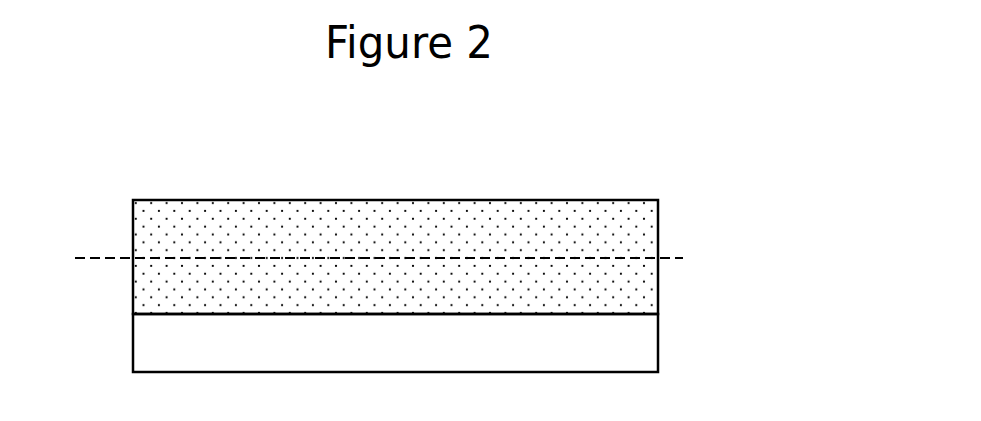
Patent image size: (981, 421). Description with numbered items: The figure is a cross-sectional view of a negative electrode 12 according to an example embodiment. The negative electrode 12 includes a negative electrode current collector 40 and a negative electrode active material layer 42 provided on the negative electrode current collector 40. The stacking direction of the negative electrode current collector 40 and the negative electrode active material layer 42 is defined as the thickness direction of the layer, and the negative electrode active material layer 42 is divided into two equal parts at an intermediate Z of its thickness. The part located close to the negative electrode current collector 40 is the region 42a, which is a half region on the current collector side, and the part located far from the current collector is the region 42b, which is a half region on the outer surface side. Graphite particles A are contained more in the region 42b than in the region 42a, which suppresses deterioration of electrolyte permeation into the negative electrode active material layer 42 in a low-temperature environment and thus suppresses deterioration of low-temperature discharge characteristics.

The negative electrode 12 is at (443, 206).
The negative electrode active material layer 42 is at (493, 240).
The region which is a half region on the negative electrode current collector side 42a is at (658, 293).
The region which is a half region on the outer surface side 42b is at (658, 230).
The negative electrode current collector 40 is at (133, 342).
The intermediate of the thickness Z is at (108, 258).